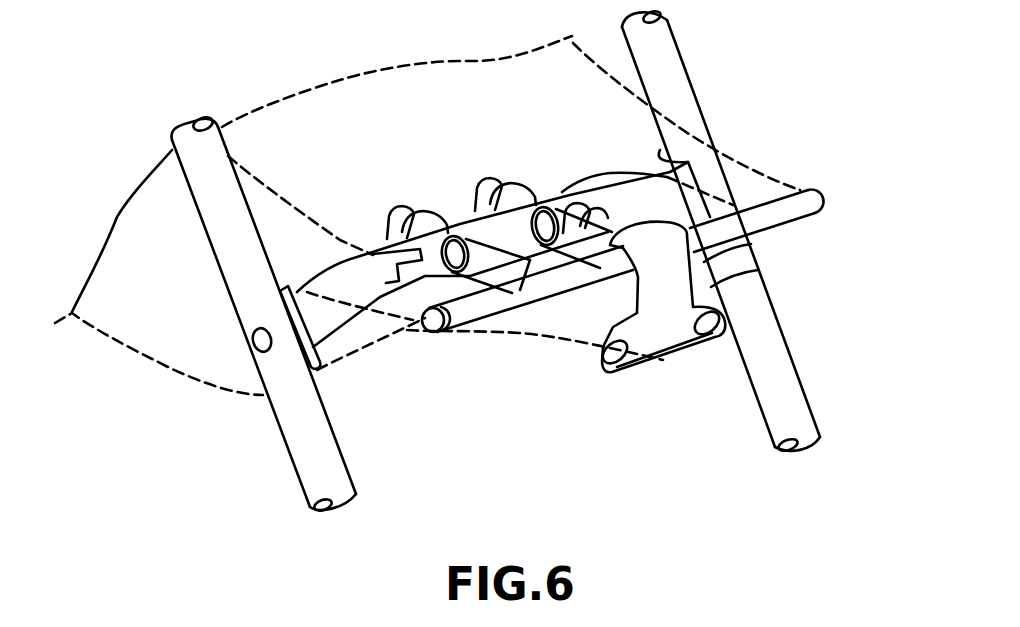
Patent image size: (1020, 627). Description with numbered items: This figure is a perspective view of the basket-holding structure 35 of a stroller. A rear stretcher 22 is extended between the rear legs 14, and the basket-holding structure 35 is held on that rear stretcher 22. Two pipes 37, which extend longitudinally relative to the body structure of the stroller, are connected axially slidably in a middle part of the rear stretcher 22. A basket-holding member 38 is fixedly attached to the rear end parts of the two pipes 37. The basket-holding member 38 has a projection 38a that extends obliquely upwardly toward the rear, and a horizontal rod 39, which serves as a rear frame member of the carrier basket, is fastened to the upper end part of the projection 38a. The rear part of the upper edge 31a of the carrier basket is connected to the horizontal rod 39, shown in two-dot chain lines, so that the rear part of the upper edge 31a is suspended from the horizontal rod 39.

The rear legs 14 is at (304, 461).
The rear stretcher 22 is at (563, 191).
The upper edge 31a is at (760, 239).
The basket-holding structure 35 is at (549, 366).
The pipes 37 is at (563, 240).
The basket-holding member 38 is at (660, 338).
The projection 38a is at (707, 283).
The horizontal rod 39 is at (458, 316).